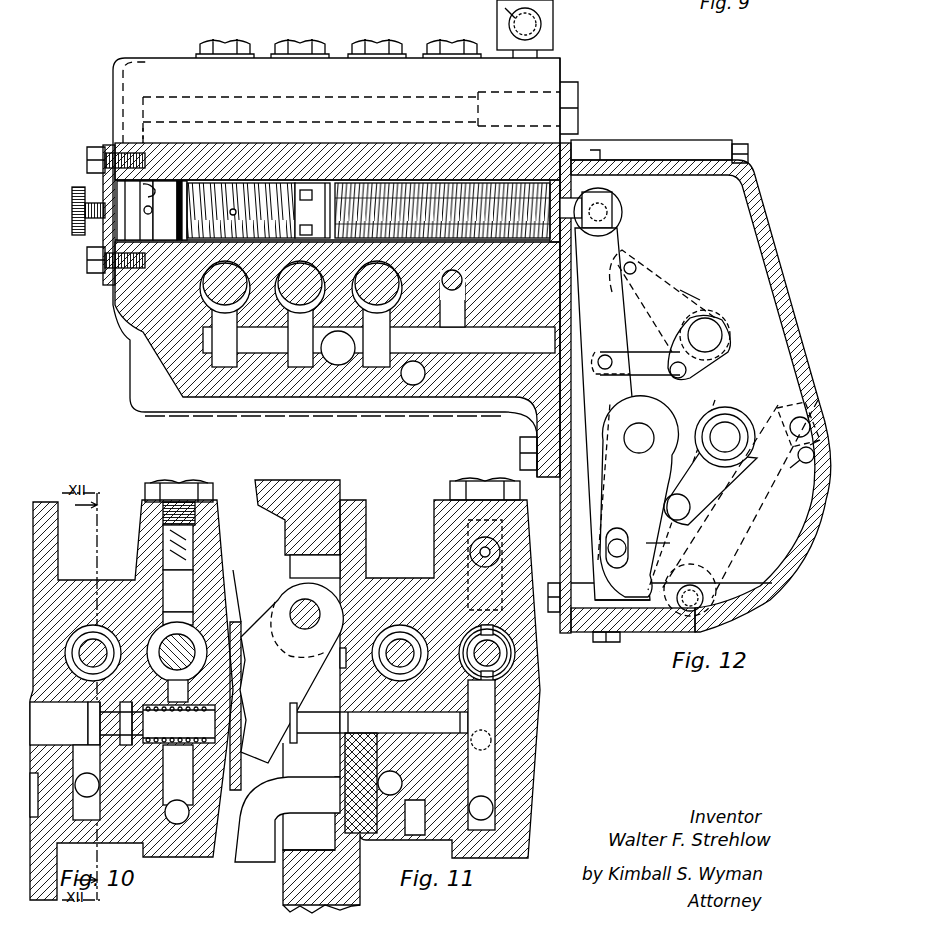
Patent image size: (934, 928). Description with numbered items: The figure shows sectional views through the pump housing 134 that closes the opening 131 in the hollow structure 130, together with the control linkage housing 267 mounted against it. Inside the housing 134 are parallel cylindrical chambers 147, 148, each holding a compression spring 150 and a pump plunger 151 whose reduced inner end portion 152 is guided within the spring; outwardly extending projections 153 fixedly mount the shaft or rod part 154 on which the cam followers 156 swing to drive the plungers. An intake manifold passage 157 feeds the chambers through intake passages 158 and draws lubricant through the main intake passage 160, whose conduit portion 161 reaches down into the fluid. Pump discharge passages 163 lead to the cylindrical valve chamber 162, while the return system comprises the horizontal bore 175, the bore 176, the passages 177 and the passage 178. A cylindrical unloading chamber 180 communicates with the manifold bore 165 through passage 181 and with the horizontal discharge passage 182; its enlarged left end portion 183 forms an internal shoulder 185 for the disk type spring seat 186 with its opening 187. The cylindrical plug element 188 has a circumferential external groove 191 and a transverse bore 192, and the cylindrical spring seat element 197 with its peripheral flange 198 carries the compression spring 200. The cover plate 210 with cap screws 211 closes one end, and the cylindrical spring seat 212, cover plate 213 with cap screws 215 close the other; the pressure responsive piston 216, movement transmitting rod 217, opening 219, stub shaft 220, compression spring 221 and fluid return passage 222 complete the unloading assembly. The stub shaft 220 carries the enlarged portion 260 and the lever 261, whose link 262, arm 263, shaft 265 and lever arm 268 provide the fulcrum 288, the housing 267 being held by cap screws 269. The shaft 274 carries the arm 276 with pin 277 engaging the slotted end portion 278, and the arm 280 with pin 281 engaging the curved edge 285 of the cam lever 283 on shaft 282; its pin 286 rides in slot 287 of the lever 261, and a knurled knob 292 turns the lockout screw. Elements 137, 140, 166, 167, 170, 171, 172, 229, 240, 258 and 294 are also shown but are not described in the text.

In FIG. 11, the hollow structure 130 is at (283, 482).
In FIG. 11, the opening 131 is at (290, 558).
In FIG. 9, the pump housing 134 is at (115, 68).
In FIG. 10, the pump housing 134 is at (142, 508).
In FIG. 11, the pump housing 134 is at (450, 506).
In FIG. 10, the housing body 137 is at (58, 550).
In FIG. 11, the housing body 137 is at (366, 522).
In FIG. 9, the fitting body 140 is at (553, 38).
In FIG. 10, the cylindrical chamber 147 is at (59, 723).
In FIG. 11, the cylindrical chamber 148 is at (437, 712).
In FIG. 10, the compression spring 150 is at (200, 745).
In FIG. 9, the pump plunger 151 is at (440, 280).
In FIG. 10, the pump plunger 151 is at (115, 715).
In FIG. 11, the pump plunger 151 is at (308, 712).
In FIG. 10, the reduced inner end portion 152 is at (156, 744).
In FIG. 11, the outwardly extending projections 153 is at (330, 585).
In FIG. 11, the shaft or rod part 154 is at (292, 604).
In FIG. 11, the cam follower 156 is at (272, 618).
In FIG. 9, the intake manifold passage 157 is at (512, 346).
In FIG. 10, the intake manifold passage 157 is at (66, 799).
In FIG. 11, the intake manifold passage 157 is at (396, 781).
In FIG. 9, the intake passage 158 is at (228, 320).
In FIG. 10, the intake passage 158 is at (74, 756).
In FIG. 11, the intake passage 158 is at (406, 739).
In FIG. 9, the main intake passage 160 is at (321, 348).
In FIG. 11, the main intake passage 160 is at (350, 775).
In FIG. 11, the conduit portion 161 is at (247, 865).
In FIG. 10, the cylindrical valve chamber 162 is at (153, 689).
In FIG. 11, the cylindrical valve chamber 162 is at (516, 664).
In FIG. 10, the pump discharge passage 163 is at (188, 690).
In FIG. 9, the manifold bore 165 is at (266, 97).
In FIG. 10, the manifold bore 165 is at (195, 552).
In FIG. 11, the manifold bore 165 is at (260, 542).
In FIG. 10, the washer 166 is at (193, 618).
In FIG. 10, the valve 167 is at (195, 585).
In FIG. 11, the valve 167 is at (285, 582).
In FIG. 9, the fitting 170 is at (497, 10).
In FIG. 9, the bore 171 is at (541, 24).
In FIG. 9, the bushing 172 is at (520, 92).
In FIG. 11, the bushing 172 is at (500, 545).
In FIG. 9, the horizontal bore 175 is at (413, 361).
In FIG. 11, the horizontal bore 175 is at (422, 826).
In FIG. 10, the bore 176 is at (185, 805).
In FIG. 11, the bore 176 is at (490, 800).
In FIG. 10, the passage 177 is at (163, 785).
In FIG. 11, the passage 178 is at (495, 742).
In FIG. 9, the cylindrical unloading chamber 180 is at (433, 183).
In FIG. 10, the cylindrical unloading chamber 180 is at (90, 625).
In FIG. 11, the cylindrical unloading chamber 180 is at (400, 626).
In FIG. 9, the passage 181 is at (150, 128).
In FIG. 10, the passage 181 is at (134, 600).
In FIG. 10, the horizontal discharge passage 182 is at (70, 648).
In FIG. 9, the left end portion 183 is at (248, 244).
In FIG. 9, the internal shoulder 185 is at (312, 246).
In FIG. 9, the disk type spring seat 186 is at (311, 197).
In FIG. 9, the opening 187 is at (311, 227).
In FIG. 9, the cylindrical plug element 188 is at (190, 170).
In FIG. 9, the circumferential external groove 191 is at (152, 210).
In FIG. 9, the transverse bore 192 is at (152, 210).
In FIG. 9, the cylindrical spring seat element 197 is at (240, 183).
In FIG. 9, the peripheral flange 198 is at (337, 359).
In FIG. 9, the compression spring 200 is at (300, 183).
In FIG. 9, the cover plate 210 is at (108, 145).
In FIG. 9, the cap screw 211 is at (87, 158).
In FIG. 9, the cylindrical spring seat 212 is at (556, 180).
In FIG. 12, the cover plate 213 is at (562, 496).
In FIG. 9, the cap screw 215 is at (520, 448).
In FIG. 9, the pressure responsive piston 216 is at (327, 183).
In FIG. 9, the movement transmitting rod 217 is at (485, 183).
In FIG. 9, the opening 219 is at (556, 246).
In FIG. 12, the stub shaft 220 is at (614, 222).
In FIG. 9, the compression spring 221 is at (373, 184).
In FIG. 11, the fluid return passage 222 is at (342, 660).
In FIG. 11, the ring 229 is at (498, 670).
In FIG. 11, the bearing 240 is at (488, 635).
In FIG. 9, the knob 258 is at (72, 212).
In FIG. 12, the enlarged portion 260 is at (620, 200).
In FIG. 12, the lever 261 is at (623, 250).
In FIG. 12, the link 262 is at (648, 358).
In FIG. 12, the arm 263 is at (690, 372).
In FIG. 12, the shaft 265 is at (712, 325).
In FIG. 12, the control linkage housing 267 is at (770, 238).
In FIG. 12, the lever arm 268 is at (690, 286).
In FIG. 12, the cap screw 269 is at (554, 585).
In FIG. 12, the shaft 274 is at (720, 452).
In FIG. 12, the arm 276 is at (765, 531).
In FIG. 12, the pin 277 is at (797, 415).
In FIG. 12, the slotted end portion 278 is at (797, 460).
In FIG. 12, the arm 280 is at (722, 488).
In FIG. 12, the pin 281 is at (688, 515).
In FIG. 12, the shaft 282 is at (646, 420).
In FIG. 12, the cam lever 283 is at (668, 430).
In FIG. 12, the curved edge 285 is at (660, 543).
In FIG. 12, the pin 286 is at (614, 538).
In FIG. 12, the slot 287 is at (612, 568).
In FIG. 12, the fulcrum 288 is at (606, 354).
In FIG. 12, the knurled knob 292 is at (706, 614).
In FIG. 12, the circle 294 is at (700, 588).